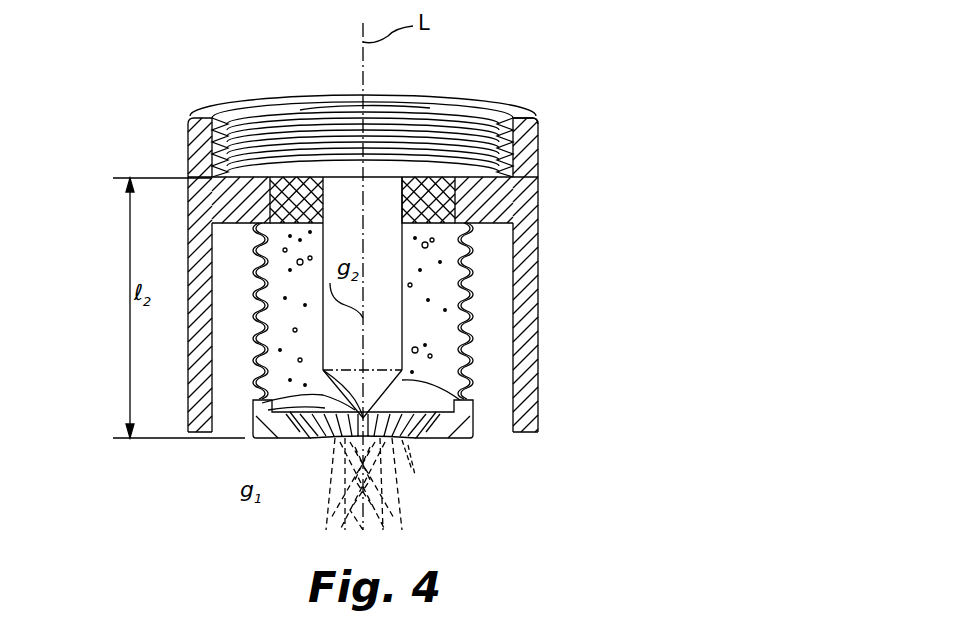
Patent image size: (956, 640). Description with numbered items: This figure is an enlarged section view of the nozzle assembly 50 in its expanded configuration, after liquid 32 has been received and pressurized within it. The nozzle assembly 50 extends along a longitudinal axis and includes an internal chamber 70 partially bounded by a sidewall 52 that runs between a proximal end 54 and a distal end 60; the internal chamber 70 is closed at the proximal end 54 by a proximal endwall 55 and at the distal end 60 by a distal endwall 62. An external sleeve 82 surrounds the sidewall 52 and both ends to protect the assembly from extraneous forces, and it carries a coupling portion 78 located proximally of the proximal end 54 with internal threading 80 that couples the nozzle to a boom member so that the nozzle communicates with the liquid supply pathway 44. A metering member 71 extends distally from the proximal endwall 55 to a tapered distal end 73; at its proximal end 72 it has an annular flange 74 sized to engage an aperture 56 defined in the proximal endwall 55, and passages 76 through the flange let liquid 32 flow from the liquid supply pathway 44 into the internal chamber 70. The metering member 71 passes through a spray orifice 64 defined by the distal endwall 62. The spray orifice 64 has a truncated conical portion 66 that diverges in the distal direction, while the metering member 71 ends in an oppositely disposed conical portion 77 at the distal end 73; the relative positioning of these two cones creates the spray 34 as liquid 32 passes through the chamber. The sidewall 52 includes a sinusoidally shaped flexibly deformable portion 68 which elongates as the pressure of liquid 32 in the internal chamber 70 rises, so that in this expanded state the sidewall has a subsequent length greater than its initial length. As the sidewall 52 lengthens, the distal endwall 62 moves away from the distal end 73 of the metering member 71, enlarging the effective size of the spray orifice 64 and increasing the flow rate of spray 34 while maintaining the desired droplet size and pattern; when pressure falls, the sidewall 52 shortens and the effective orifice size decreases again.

The nozzle assembly 50 is at (108, 153).
The external sleeve 82 is at (540, 268).
The proximal end 54 is at (518, 177).
The aperture 56 is at (212, 177).
The metering member 71 is at (320, 250).
The proximal endwall 55 is at (240, 100).
The proximal end 72 is at (318, 99).
The passages 76 is at (285, 103).
The internal threading 80 is at (405, 100).
The annular flange 74 is at (497, 102).
The coupling portion 78 is at (509, 110).
The liquid supply pathway 44 is at (352, 100).
The sidewall 52 is at (484, 262).
The liquid 32 is at (264, 327).
The flexibly deformable portion 68 is at (470, 330).
The internal chamber 70 is at (462, 375).
The distal end 73 is at (357, 412).
The conical portion 77 is at (265, 397).
The distal endwall 62 is at (262, 445).
The distal end 60 is at (478, 445).
The truncated conical portion 66 is at (305, 443).
The spray 34 is at (325, 518).
The spray orifice 64 is at (407, 450).